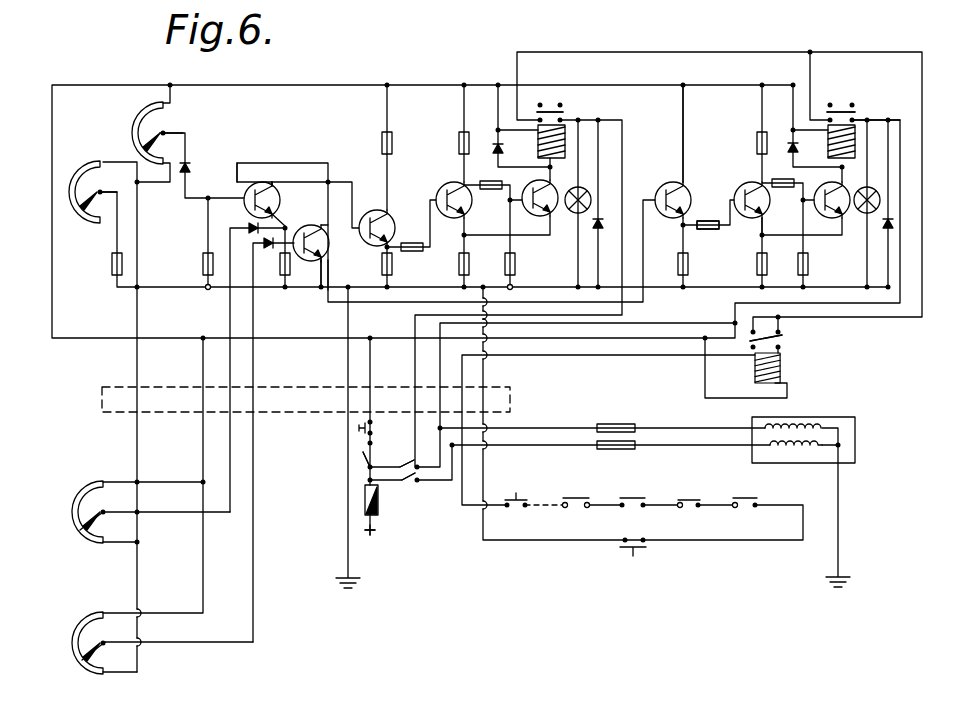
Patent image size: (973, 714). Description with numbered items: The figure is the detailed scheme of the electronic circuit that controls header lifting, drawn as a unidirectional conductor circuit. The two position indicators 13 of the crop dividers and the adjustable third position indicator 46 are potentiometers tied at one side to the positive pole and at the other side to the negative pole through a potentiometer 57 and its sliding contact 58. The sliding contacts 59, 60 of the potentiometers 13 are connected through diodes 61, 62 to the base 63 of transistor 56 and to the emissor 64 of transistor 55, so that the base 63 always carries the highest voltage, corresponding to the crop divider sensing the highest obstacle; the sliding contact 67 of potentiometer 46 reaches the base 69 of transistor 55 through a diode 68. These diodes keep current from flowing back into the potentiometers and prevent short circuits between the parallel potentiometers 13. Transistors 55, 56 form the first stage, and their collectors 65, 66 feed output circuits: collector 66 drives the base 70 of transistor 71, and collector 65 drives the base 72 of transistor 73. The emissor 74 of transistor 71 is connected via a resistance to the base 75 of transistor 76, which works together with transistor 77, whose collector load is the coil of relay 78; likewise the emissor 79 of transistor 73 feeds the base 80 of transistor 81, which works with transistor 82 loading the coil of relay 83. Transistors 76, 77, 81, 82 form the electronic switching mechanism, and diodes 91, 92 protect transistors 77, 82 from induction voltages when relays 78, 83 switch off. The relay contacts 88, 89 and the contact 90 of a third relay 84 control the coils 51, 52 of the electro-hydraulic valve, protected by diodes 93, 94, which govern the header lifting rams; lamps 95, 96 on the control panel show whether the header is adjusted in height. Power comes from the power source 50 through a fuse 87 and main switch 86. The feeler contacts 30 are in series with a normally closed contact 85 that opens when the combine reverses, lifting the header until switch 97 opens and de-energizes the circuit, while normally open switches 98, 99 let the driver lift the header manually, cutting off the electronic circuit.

The position indicators 13 is at (78, 672).
The electric contacts 30 is at (736, 496).
The adjustable third position indicator 46 is at (148, 112).
The power source 50 is at (375, 545).
The coil 51 is at (812, 422).
The coil 52 is at (790, 452).
The transistor 55 is at (266, 182).
The transistor 56 is at (326, 258).
The potentiometer 57 is at (72, 175).
The sliding contact 58 is at (93, 218).
The sliding contact 59 is at (78, 494).
The sliding contact 60 is at (80, 628).
The diode 61 is at (245, 228).
The diode 62 is at (268, 250).
The base 63 is at (316, 266).
The emissor 64 is at (296, 240).
The collector 65 is at (330, 276).
The collector 66 is at (290, 188).
The sliding contact 67 is at (168, 130).
The diode 68 is at (190, 164).
The base 69 is at (240, 178).
The base 70 is at (368, 216).
The transistor 71 is at (440, 196).
The base 72 is at (660, 195).
The transistor 73 is at (688, 186).
The emissor 74 is at (412, 243).
The base 75 is at (458, 262).
The transistor 76 is at (462, 183).
The transistor 77 is at (522, 215).
The relay 78 is at (536, 140).
The emissor 79 is at (690, 226).
The base 80 is at (738, 204).
The transistor 81 is at (750, 220).
The transistor 82 is at (836, 220).
The relay 83 is at (856, 140).
The third relay 84 is at (782, 368).
The contact 85 is at (634, 558).
The main switch 86 is at (356, 428).
The fuse 87 is at (362, 500).
The contact 88 is at (548, 103).
The contact 89 is at (842, 103).
The contact 90 is at (784, 338).
The diode 91 is at (493, 146).
The diode 92 is at (789, 146).
The diode 93 is at (596, 226).
The diode 94 is at (897, 223).
The lamp 95 is at (590, 190).
The lamp 96 is at (880, 200).
The switch 97 is at (362, 452).
The switch 98 is at (406, 463).
The switch 99 is at (410, 488).